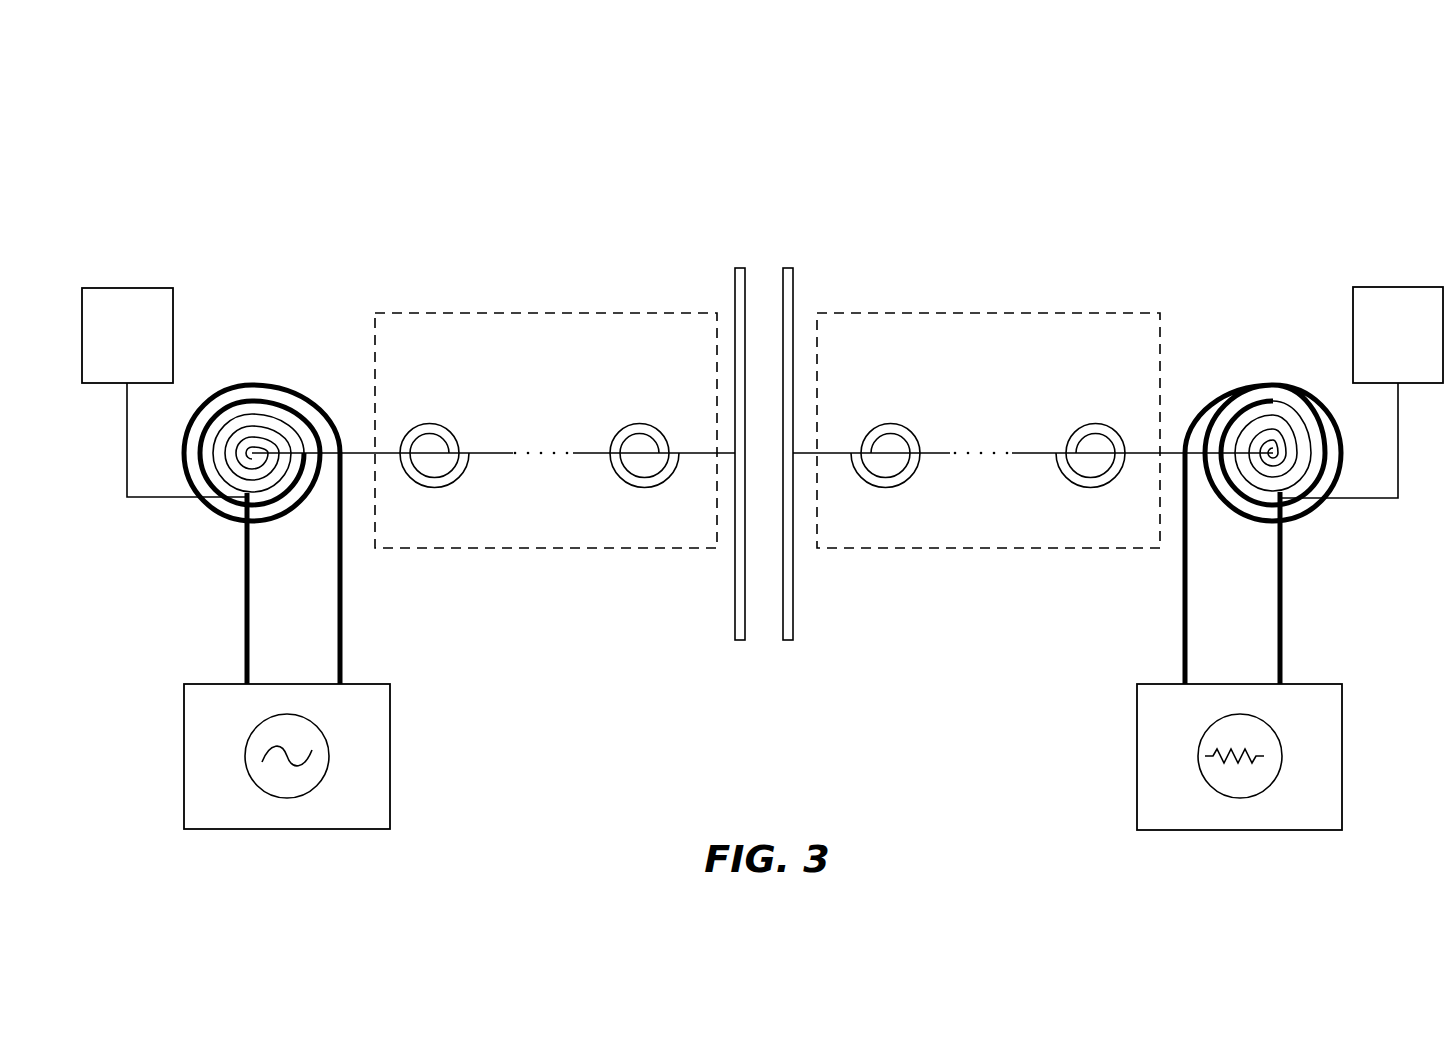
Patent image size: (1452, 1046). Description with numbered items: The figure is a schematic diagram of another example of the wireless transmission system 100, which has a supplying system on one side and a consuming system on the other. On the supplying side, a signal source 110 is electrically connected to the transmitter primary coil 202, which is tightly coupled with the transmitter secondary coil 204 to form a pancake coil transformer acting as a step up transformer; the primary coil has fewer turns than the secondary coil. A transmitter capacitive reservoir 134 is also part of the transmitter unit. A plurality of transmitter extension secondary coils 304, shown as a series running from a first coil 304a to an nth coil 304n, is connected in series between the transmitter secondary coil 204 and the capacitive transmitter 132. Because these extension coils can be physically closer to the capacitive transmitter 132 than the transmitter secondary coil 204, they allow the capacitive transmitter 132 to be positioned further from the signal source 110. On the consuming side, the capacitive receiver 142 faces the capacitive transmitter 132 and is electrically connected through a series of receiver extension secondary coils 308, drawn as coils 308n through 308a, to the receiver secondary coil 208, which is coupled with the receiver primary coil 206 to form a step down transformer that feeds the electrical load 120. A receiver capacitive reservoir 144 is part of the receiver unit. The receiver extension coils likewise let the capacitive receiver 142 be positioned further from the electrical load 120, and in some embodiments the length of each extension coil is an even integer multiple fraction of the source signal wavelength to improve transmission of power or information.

The wireless transmission system 100 is at (312, 137).
The signal source 110 is at (390, 738).
The electrical load 120 is at (1138, 757).
The capacitive transmitter 132 is at (736, 289).
The transmitter capacitive reservoir 134 is at (173, 311).
The capacitive receiver 142 is at (796, 291).
The receiver capacitive reservoir 144 is at (1398, 288).
The transmitter primary coil 202 is at (253, 383).
The transmitter secondary coil 204 is at (288, 433).
The receiver primary coil 206 is at (1238, 390).
The receiver secondary coil 208 is at (1297, 417).
The transmitter extension secondary coils 304 is at (500, 344).
The transmitter extension secondary coil 304a is at (435, 417).
The transmitter extension secondary coil 304n is at (642, 417).
The receiver extension secondary coils 308 is at (963, 344).
The receiver extension secondary coil 308n is at (878, 418).
The receiver extension secondary coil 308a is at (1089, 417).